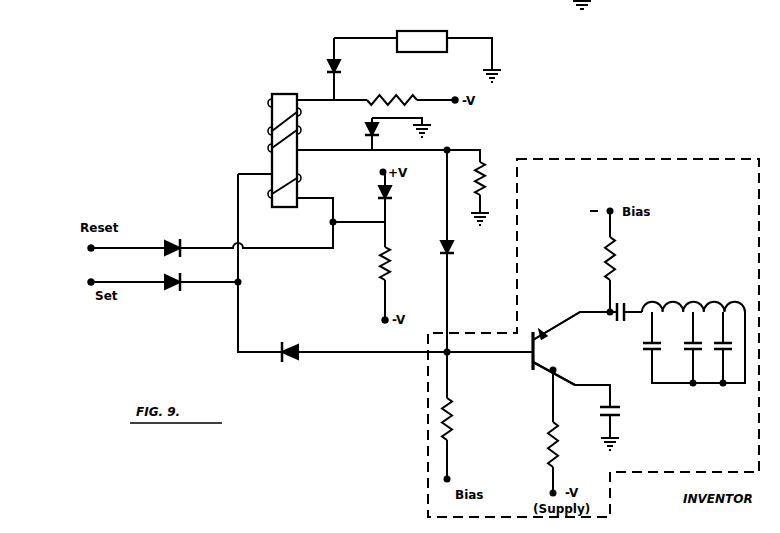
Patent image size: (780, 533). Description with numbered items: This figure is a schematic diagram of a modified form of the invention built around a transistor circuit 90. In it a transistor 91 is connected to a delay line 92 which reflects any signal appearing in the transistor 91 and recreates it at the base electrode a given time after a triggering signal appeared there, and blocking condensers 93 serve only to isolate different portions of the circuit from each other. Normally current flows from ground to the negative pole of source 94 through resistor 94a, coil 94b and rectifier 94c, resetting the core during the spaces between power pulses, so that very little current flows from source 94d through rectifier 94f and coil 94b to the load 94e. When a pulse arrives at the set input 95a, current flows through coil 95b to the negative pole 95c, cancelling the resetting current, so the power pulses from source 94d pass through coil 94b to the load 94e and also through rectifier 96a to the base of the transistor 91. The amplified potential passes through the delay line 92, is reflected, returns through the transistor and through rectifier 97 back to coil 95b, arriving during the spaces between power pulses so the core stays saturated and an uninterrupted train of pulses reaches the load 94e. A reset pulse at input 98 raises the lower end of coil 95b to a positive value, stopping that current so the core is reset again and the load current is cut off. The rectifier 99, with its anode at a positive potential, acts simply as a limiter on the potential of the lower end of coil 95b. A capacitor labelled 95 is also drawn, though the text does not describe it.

The transistor circuit 90 is at (690, 158).
The transistor 91 is at (540, 354).
The delay line 92 is at (704, 303).
The blocking condensers 93 is at (620, 302).
The source 94 is at (455, 104).
The resistor 94a is at (409, 92).
The coil 94b is at (272, 128).
The rectifier 94c is at (366, 132).
The source 94d is at (452, 30).
The load 94e is at (485, 178).
The rectifier 94f is at (326, 66).
The bypass capacitor 95 is at (620, 412).
The set input 95a is at (88, 284).
The coil 95b is at (297, 180).
The negative pole 95c is at (383, 322).
The rectifier 96a is at (455, 254).
The rectifier 97 is at (292, 362).
The reset input 98 is at (88, 249).
The rectifier 99 is at (392, 196).